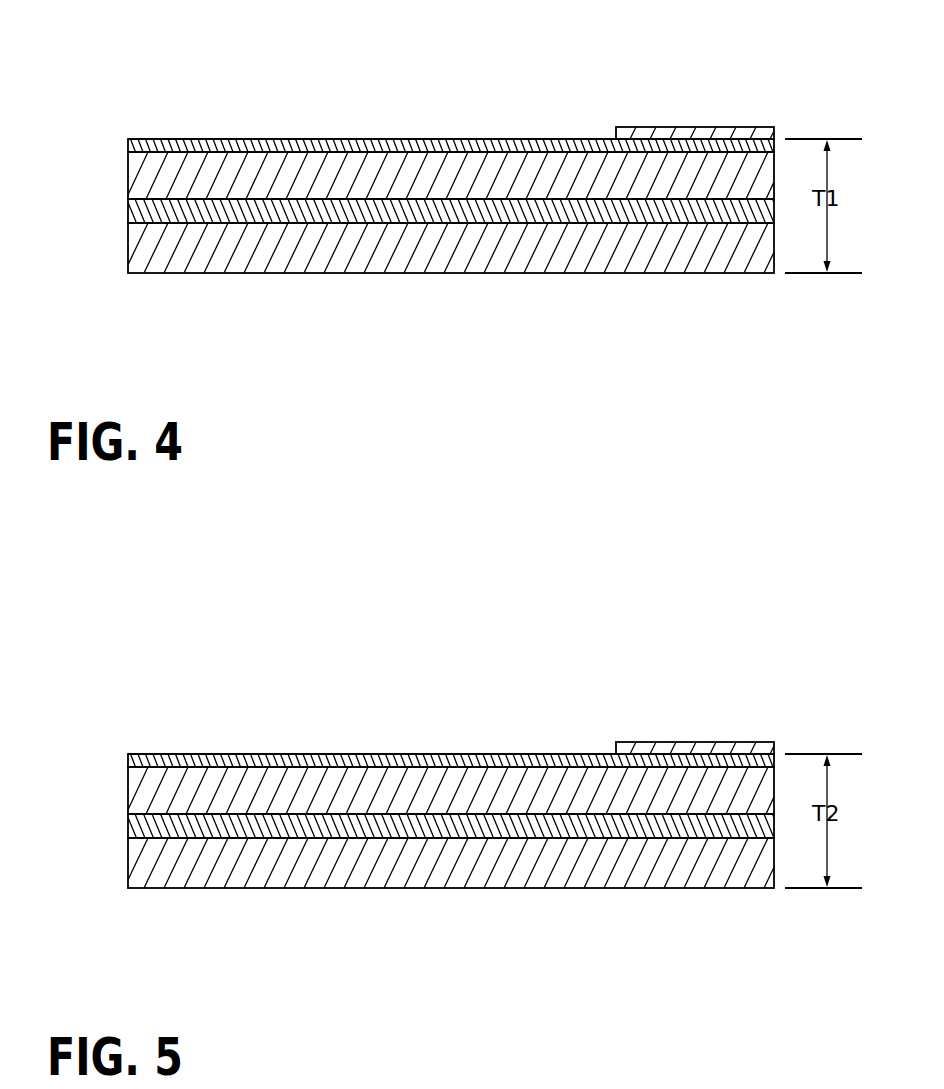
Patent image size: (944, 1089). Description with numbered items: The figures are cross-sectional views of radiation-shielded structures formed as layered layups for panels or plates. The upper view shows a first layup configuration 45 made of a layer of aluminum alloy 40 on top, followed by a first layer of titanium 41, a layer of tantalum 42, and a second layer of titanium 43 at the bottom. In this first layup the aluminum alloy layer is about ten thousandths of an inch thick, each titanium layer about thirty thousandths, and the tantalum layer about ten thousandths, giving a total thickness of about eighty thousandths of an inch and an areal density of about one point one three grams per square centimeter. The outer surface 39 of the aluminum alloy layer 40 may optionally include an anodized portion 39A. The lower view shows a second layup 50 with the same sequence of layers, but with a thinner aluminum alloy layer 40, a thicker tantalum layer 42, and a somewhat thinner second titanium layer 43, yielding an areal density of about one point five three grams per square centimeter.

In FIG. 4, the outer surface 39 is at (419, 139).
In FIG. 5, the outer surface 39 is at (451, 723).
In FIG. 4, the anodized portion 39A is at (708, 126).
In FIG. 5, the anodized portion 39A is at (693, 719).
In FIG. 4, the layer of aluminum alloy 40 is at (128, 146).
In FIG. 5, the layer of aluminum alloy 40 is at (404, 740).
In FIG. 4, the first layer of titanium 41 is at (128, 178).
In FIG. 5, the first layer of titanium 41 is at (404, 790).
In FIG. 4, the layer of tantalum 42 is at (128, 210).
In FIG. 5, the layer of tantalum 42 is at (404, 828).
In FIG. 4, the second layer of titanium 43 is at (128, 247).
In FIG. 5, the second layer of titanium 43 is at (404, 866).
In FIG. 4, the first layup configuration 45 is at (183, 105).
In FIG. 5, the second layup 50 is at (437, 768).